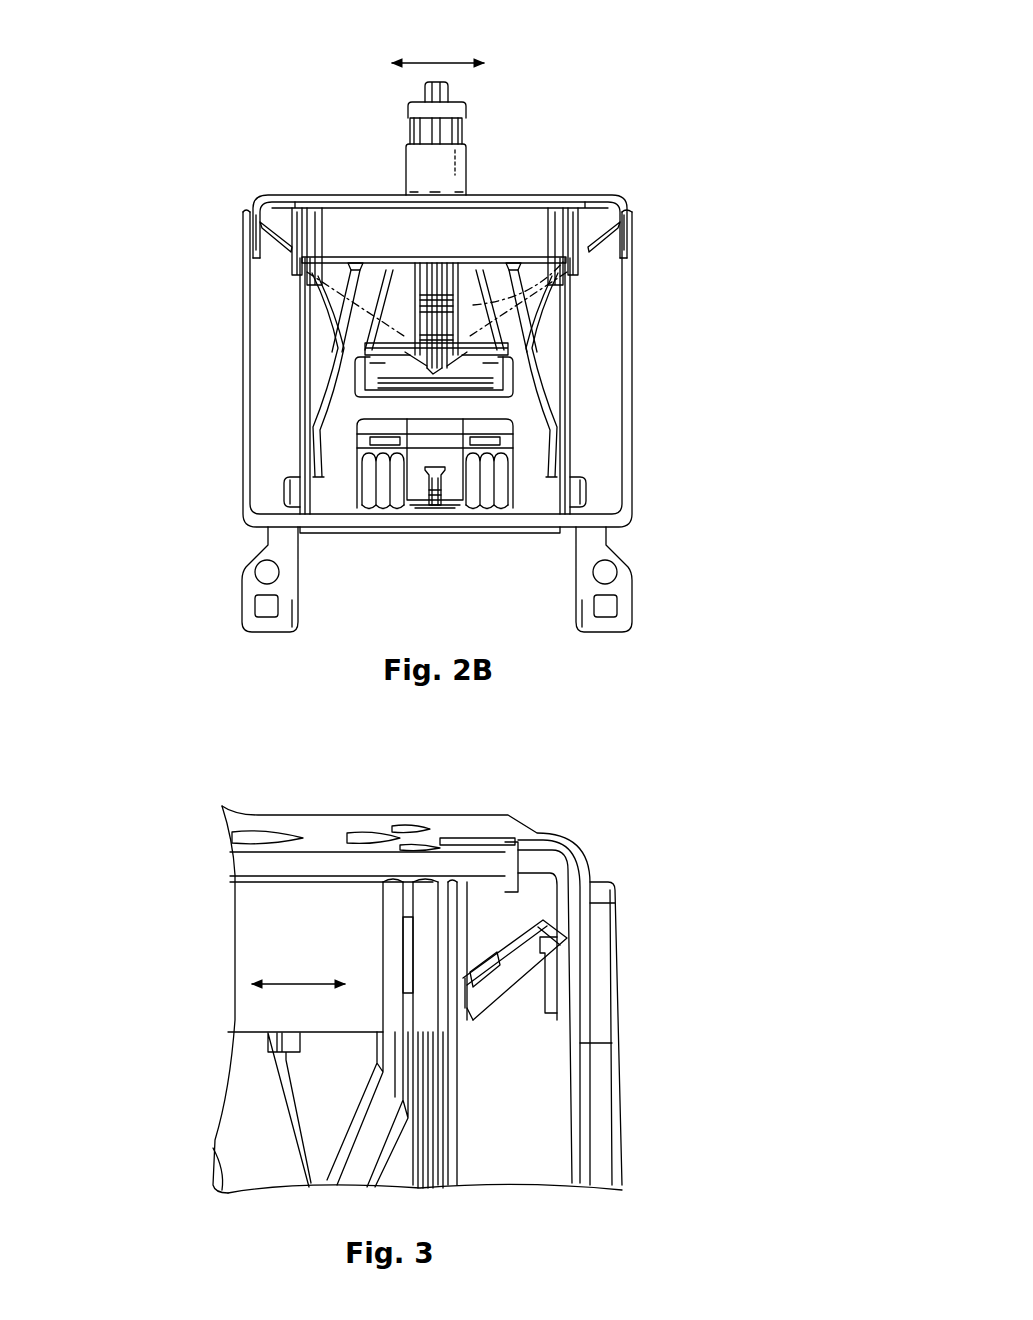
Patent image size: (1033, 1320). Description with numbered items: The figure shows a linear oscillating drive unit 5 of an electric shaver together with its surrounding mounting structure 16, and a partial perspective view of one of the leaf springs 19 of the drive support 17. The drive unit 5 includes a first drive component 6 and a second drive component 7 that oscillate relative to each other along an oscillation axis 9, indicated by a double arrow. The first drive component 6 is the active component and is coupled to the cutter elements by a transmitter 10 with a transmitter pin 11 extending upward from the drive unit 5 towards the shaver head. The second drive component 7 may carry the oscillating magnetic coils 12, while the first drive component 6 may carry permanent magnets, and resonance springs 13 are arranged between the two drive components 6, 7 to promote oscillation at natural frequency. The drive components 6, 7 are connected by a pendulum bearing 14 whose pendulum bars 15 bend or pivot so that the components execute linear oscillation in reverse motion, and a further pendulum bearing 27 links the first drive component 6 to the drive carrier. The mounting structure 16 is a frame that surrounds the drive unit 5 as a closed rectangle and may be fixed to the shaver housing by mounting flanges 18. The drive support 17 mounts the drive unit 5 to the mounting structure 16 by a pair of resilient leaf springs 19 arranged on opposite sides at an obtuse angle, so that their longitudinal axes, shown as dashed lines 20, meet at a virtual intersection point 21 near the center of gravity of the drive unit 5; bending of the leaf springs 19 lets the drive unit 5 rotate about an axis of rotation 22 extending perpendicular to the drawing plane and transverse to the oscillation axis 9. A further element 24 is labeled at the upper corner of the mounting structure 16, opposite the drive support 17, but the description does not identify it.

In FIG. 2B, the drive unit 5 is at (283, 413).
In FIG. 2B, the first drive component 6 is at (450, 410).
In FIG. 2B, the second drive component 7 is at (492, 535).
In FIG. 2B, the oscillation axis 9 is at (432, 60).
In FIG. 3, the oscillation axis 9 is at (302, 982).
In FIG. 2B, the transmitter 10 is at (473, 97).
In FIG. 2B, the transmitter pin 11 is at (416, 165).
In FIG. 2B, the magnetic coils 12 is at (473, 305).
In FIG. 2B, the resonance springs 13 is at (468, 514).
In FIG. 2B, the pendulum bearing 14 is at (300, 336).
In FIG. 2B, the pendulum bars 15 is at (300, 440).
In FIG. 3, the pendulum bars 15 is at (428, 1105).
In FIG. 2B, the mounting structure 16 is at (627, 200).
In FIG. 3, the mounting structure 16 is at (605, 1087).
In FIG. 2B, the drive support 17 is at (600, 222).
In FIG. 2B, the mounting flanges 18 is at (250, 588).
In FIG. 2B, the leaf springs 19 is at (290, 250).
In FIG. 3, the leaf springs 19 is at (517, 960).
In FIG. 2B, the dashed line 20 is at (545, 336).
In FIG. 2B, the virtual intersection point 21 is at (495, 372).
In FIG. 2B, the axis of rotation 22 is at (400, 368).
In FIG. 2B, the latch opening 24 is at (270, 222).
In FIG. 2B, the further pendulum bearing 27 is at (298, 303).